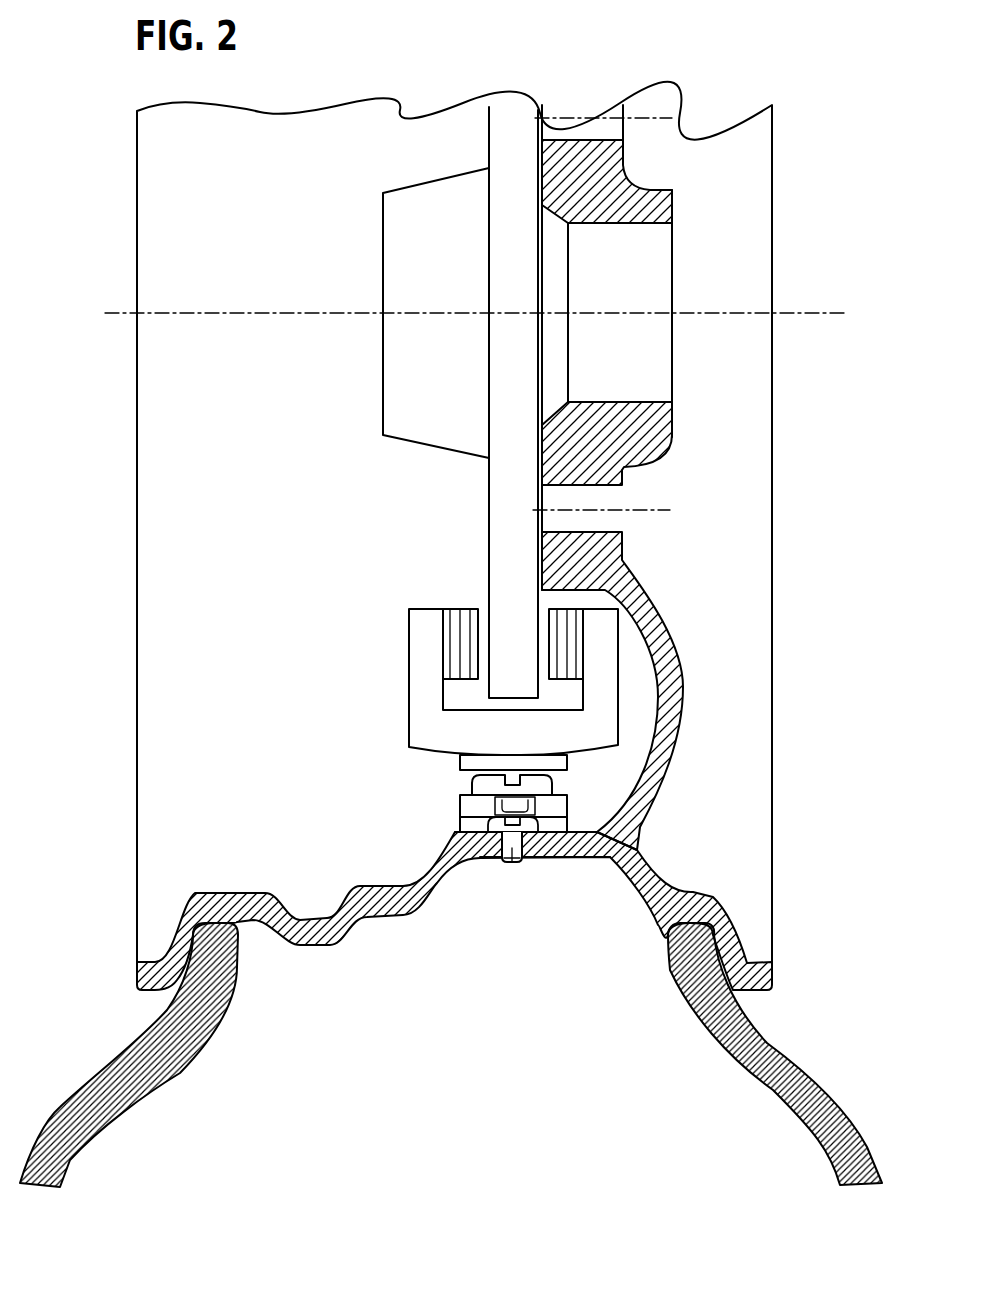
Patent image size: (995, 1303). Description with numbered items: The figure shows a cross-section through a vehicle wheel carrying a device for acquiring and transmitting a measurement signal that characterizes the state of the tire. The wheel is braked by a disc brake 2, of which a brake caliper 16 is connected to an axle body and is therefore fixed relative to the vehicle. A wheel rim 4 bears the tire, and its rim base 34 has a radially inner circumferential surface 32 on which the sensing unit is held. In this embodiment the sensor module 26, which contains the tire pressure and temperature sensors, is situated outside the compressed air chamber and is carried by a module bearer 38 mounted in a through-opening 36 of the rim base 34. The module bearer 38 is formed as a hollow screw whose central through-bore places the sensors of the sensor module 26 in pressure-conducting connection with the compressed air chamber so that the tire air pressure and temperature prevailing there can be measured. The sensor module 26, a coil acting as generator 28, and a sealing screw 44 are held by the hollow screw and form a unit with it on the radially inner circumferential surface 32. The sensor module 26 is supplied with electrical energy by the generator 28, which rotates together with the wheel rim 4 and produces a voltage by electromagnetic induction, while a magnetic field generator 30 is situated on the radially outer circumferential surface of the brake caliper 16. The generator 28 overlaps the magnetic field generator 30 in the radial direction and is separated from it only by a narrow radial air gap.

The disc brake 2 is at (350, 382).
The wheel rim 4 is at (640, 607).
The brake caliper 16 is at (426, 652).
The sensor module 26 is at (462, 822).
The generator 28 is at (462, 800).
The magnetic field generator 30 is at (548, 764).
The radially inner circumferential surface 32 is at (455, 835).
The rim base 34 is at (398, 893).
The through-opening 36 is at (490, 877).
The module bearer 38 is at (515, 866).
The sealing screw 44 is at (493, 790).